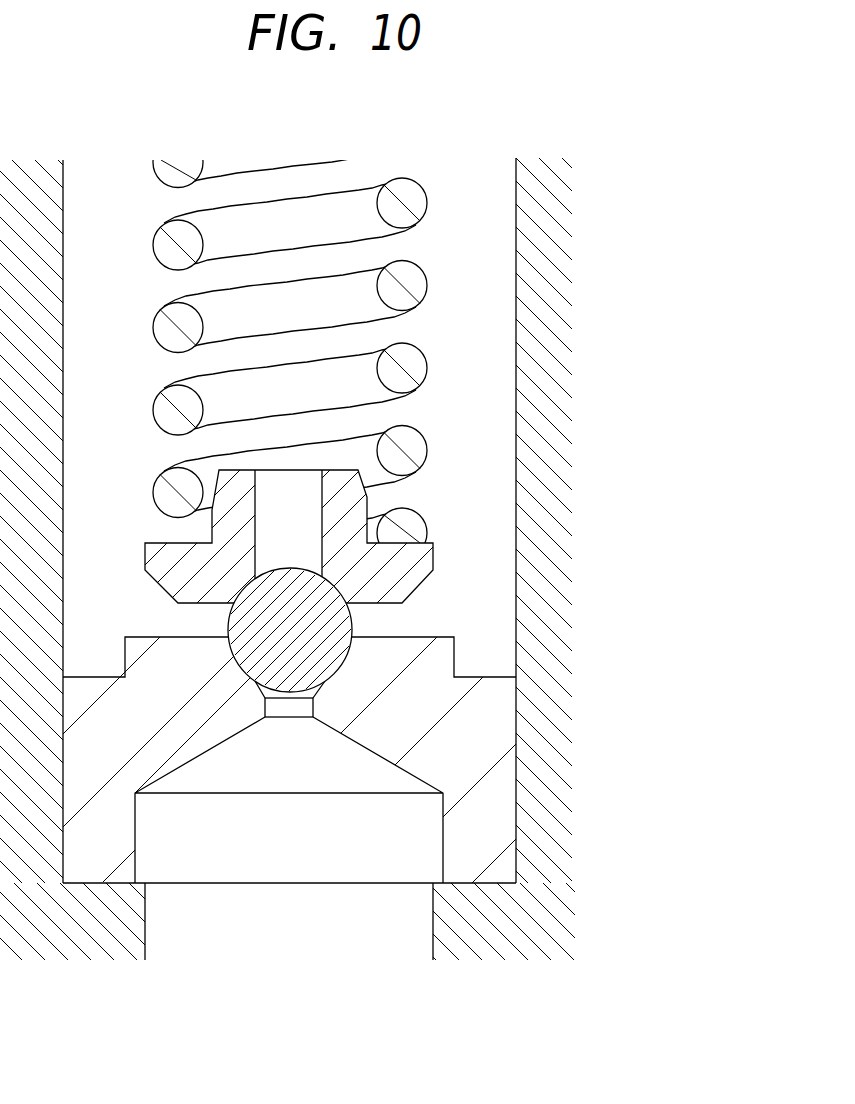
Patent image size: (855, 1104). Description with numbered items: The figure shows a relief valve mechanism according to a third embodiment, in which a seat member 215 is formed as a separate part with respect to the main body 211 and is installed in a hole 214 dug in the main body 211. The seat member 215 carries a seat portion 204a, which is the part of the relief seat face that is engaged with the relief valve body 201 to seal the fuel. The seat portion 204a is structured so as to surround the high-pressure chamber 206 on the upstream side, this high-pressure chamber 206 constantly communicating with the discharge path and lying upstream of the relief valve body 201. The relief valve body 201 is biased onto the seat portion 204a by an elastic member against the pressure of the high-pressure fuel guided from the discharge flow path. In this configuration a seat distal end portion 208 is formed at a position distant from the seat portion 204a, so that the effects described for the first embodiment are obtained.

The relief valve body 201 is at (297, 637).
The seat portion 204a is at (338, 675).
The high-pressure chamber 206 is at (400, 370).
The seat distal end portion 208 is at (313, 698).
The main body 211 is at (542, 243).
The hole 214 is at (468, 187).
The seat member 215 is at (413, 670).